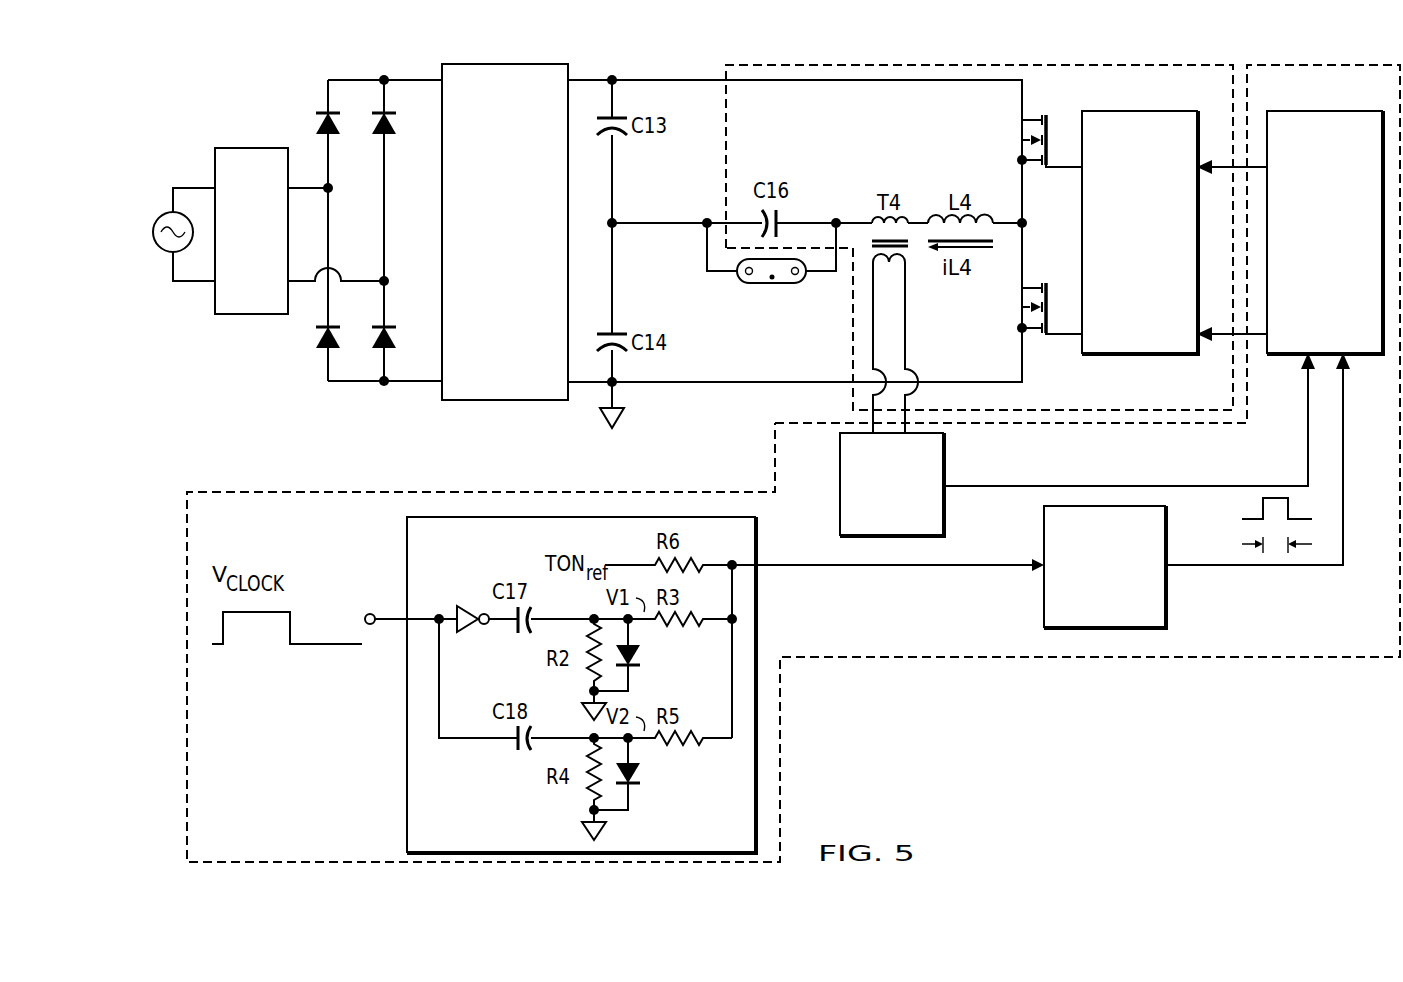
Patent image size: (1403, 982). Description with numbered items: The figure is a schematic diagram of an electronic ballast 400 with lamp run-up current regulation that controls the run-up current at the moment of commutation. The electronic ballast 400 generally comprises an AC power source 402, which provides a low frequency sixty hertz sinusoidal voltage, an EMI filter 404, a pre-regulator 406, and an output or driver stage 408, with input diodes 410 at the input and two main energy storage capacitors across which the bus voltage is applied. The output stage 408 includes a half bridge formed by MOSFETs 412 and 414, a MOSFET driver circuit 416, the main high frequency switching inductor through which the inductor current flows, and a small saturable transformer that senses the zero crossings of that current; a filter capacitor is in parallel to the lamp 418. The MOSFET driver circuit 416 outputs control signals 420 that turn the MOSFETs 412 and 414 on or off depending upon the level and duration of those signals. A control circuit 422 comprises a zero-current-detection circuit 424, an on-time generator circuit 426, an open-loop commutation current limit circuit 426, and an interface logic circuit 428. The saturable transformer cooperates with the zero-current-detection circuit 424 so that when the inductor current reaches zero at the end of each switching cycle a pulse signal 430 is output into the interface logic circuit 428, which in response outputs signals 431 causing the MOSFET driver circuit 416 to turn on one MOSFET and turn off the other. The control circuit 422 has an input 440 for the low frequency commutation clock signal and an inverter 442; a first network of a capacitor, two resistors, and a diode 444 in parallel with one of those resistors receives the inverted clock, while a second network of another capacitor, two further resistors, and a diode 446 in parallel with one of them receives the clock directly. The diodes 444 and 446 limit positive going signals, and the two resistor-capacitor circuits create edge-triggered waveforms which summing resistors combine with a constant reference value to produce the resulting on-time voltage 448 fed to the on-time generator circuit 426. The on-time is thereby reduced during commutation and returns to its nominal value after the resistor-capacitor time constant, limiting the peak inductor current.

The electronic ballast 400 is at (196, 138).
The AC power source 402 is at (162, 253).
The EMI filter 404 is at (250, 316).
The pre-regulator 406 is at (502, 402).
The output or driver stage 408 is at (724, 72).
The input diodes 410 is at (316, 113).
The MOSFET 412 is at (1035, 112).
The MOSFET 414 is at (1032, 334).
The MOSFET driver circuit 416 is at (1152, 355).
The lamp 418 is at (762, 284).
The control signals 420 is at (1060, 168).
The control circuit 422 is at (781, 725).
The zero-current-detection circuit 424 is at (945, 455).
The on-time generator circuit 426 is at (1167, 593).
The interface logic circuit 428 is at (1320, 110).
The pulse signal 430 is at (1247, 483).
The signals 431 is at (1222, 157).
The input 440 is at (370, 608).
The inverter 442 is at (467, 603).
The diode 444 is at (641, 662).
The diode 446 is at (641, 777).
The resulting voltage TON 448 is at (993, 570).